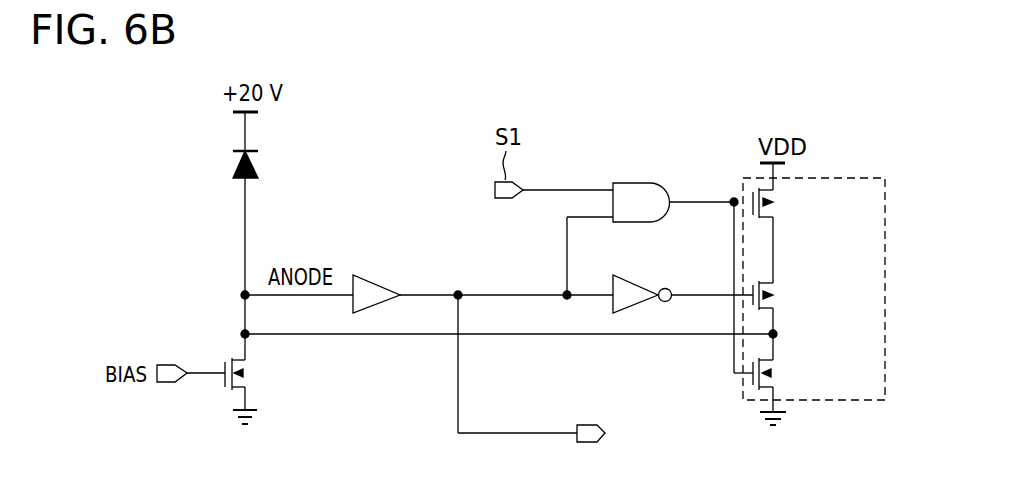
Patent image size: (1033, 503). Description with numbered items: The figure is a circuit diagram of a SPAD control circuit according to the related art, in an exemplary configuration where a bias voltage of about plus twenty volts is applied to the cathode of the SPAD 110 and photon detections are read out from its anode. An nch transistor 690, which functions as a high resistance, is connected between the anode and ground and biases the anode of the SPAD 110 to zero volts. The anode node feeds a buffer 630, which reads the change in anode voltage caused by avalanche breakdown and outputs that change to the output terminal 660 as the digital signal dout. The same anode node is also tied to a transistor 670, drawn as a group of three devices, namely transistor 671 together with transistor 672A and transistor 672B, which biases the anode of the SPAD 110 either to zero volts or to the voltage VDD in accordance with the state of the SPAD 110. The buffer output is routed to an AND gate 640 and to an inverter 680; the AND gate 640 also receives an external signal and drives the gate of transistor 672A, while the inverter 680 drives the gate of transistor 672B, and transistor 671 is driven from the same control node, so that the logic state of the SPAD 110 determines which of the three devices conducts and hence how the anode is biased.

The SPAD 110 is at (257, 168).
The buffer 630 is at (372, 275).
The AND gate 640 is at (627, 183).
The output terminal 660 is at (583, 425).
The transistor 670 is at (887, 192).
The transistor 671 is at (781, 378).
The transistor 672A is at (781, 205).
The transistor 672B is at (781, 298).
The inverter 680 is at (632, 277).
The nch transistor 690 is at (250, 379).